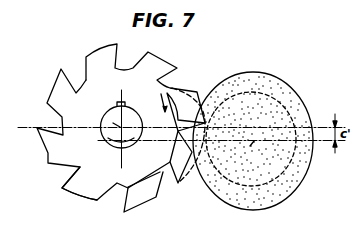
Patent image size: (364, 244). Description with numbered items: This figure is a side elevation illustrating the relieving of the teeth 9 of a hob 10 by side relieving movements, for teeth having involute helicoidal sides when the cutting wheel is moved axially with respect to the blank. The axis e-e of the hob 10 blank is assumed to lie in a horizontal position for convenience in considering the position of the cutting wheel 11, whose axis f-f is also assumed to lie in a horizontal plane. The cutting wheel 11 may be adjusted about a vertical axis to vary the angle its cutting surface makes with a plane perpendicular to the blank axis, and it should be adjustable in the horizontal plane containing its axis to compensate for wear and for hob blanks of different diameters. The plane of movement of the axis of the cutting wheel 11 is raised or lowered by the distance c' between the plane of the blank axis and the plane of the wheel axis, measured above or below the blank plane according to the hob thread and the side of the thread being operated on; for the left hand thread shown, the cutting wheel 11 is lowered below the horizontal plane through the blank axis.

The teeth 9 is at (47, 158).
The hob 10 is at (81, 169).
The cutting wheel 11 is at (284, 89).